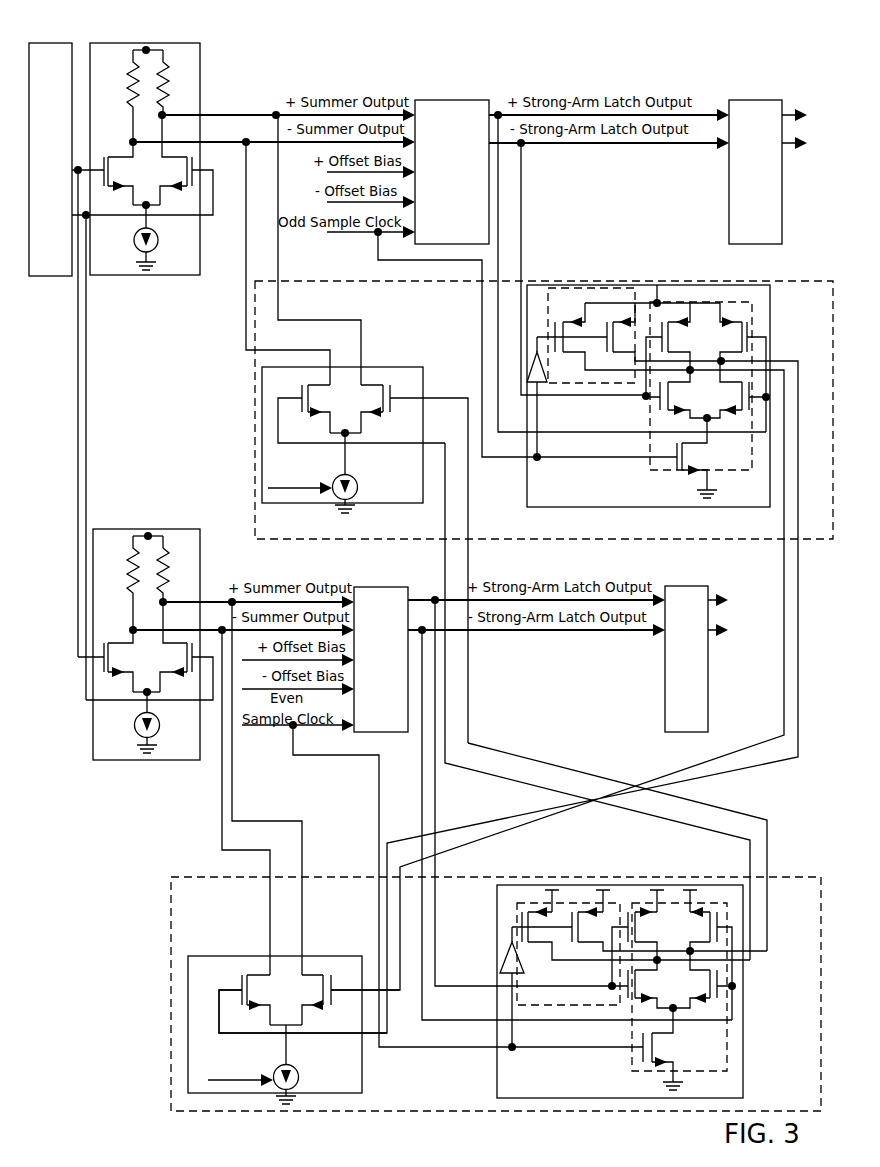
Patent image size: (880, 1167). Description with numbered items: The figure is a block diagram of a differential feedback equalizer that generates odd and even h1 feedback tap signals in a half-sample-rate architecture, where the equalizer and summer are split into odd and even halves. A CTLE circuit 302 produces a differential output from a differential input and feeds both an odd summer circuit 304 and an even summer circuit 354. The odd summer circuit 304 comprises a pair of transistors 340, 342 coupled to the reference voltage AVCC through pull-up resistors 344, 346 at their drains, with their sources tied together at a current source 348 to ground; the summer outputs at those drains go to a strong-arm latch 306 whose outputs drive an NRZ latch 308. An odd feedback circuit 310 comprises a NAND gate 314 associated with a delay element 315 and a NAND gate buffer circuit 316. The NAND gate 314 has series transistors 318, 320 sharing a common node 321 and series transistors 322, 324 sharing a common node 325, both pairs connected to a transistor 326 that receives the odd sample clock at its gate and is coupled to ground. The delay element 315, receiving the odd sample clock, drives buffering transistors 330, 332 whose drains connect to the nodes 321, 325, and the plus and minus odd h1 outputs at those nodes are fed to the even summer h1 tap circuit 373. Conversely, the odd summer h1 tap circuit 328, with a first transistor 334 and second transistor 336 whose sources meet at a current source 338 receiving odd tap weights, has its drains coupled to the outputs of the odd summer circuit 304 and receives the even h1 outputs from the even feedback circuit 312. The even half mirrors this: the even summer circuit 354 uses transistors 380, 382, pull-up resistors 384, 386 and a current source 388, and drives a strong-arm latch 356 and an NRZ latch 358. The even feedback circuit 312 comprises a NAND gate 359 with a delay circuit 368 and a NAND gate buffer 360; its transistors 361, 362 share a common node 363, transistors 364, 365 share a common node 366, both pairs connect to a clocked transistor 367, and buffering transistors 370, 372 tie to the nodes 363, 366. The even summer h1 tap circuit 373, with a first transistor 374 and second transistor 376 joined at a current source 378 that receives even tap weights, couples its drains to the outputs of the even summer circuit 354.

The CTLE circuit 302 is at (57, 43).
The odd summer circuit 304 is at (169, 141).
The strong-arm latch 306 is at (444, 100).
The NRZ latch 308 is at (760, 100).
The odd feedback circuit 310 is at (787, 281).
The even feedback circuit 312 is at (770, 877).
The NAND gate 314 is at (678, 368).
The delay element 315 is at (545, 385).
The NAND gate buffer circuit 316 is at (625, 272).
The transistor 318 is at (683, 318).
The transistor 320 is at (680, 412).
The common node 321 is at (690, 369).
The transistor 322 is at (730, 318).
The transistor 324 is at (724, 412).
The common node 325 is at (720, 363).
The transistor 326 is at (684, 472).
The odd summer h1 tap circuit 328 is at (365, 537).
The buffering transistor 330 is at (570, 322).
The buffering transistor 332 is at (612, 320).
The first transistor 334 is at (320, 416).
The second transistor 336 is at (373, 415).
The current source 338 is at (358, 486).
The transistor 340 is at (126, 157).
The transistor 342 is at (166, 158).
The pull-up resistor 344 is at (130, 64).
The pull-up resistor 346 is at (167, 64).
The current source 348 is at (132, 240).
The even summer circuit 354 is at (168, 626).
The strong-arm latch 356 is at (373, 587).
The NRZ latch 358 is at (680, 586).
The NAND gate 359 is at (635, 970).
The NAND gate buffer 360 is at (479, 913).
The transistor 361 is at (642, 908).
The transistor 362 is at (650, 1000).
The common node 363 is at (659, 962).
The transistor 364 is at (692, 908).
The transistor 365 is at (698, 1002).
The common node 366 is at (686, 950).
The transistor 367 is at (652, 1064).
The delay circuit 368 is at (508, 973).
The buffering transistor 370 is at (530, 908).
The buffering transistor 372 is at (582, 908).
The even summer h1 tap circuit 373 is at (294, 1005).
The first transistor 374 is at (250, 973).
The second transistor 376 is at (310, 1009).
The current source 378 is at (299, 1076).
The transistor 380 is at (126, 643).
The transistor 382 is at (165, 643).
The pull-up resistor 384 is at (131, 552).
The pull-up resistor 386 is at (170, 552).
The current source 388 is at (134, 725).